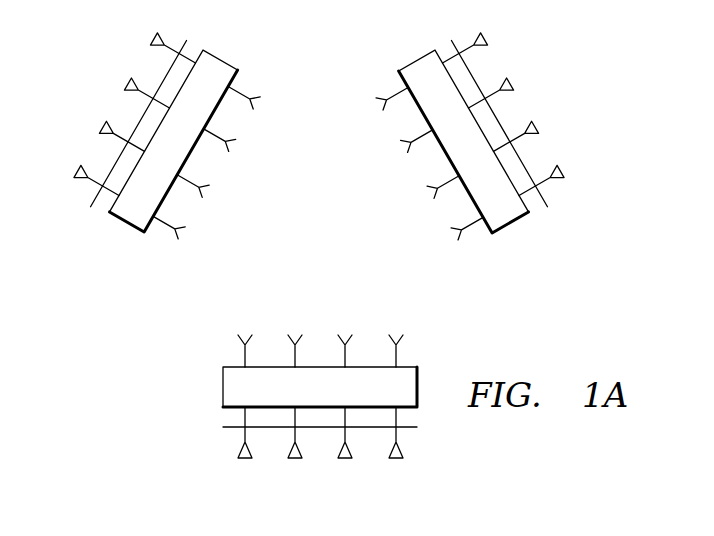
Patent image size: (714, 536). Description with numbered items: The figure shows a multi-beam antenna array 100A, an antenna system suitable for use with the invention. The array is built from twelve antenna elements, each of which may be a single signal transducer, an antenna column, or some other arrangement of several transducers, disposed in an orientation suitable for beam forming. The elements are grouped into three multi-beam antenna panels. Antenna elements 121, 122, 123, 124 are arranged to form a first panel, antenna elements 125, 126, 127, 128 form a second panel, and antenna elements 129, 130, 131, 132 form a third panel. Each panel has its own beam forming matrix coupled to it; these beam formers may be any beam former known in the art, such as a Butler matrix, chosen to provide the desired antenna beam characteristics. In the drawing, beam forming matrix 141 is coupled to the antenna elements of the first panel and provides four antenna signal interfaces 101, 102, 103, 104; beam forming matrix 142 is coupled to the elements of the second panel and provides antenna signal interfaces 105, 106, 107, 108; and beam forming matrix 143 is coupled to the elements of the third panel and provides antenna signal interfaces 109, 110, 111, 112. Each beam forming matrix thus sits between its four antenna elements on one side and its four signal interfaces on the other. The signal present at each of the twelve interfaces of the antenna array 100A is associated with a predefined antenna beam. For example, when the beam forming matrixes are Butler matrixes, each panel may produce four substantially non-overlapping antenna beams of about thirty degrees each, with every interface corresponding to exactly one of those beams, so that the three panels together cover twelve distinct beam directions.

The multi-beam antenna array 100A is at (114, 331).
The antenna signal interface 101 is at (175, 229).
The antenna signal interface 102 is at (199, 187).
The antenna signal interface 103 is at (225, 141).
The antenna signal interface 104 is at (250, 99).
The antenna signal interface 105 is at (386, 100).
The antenna signal interface 106 is at (411, 142).
The antenna signal interface 107 is at (437, 188).
The antenna signal interface 108 is at (461, 230).
The antenna signal interface 109 is at (396, 335).
The antenna signal interface 110 is at (345, 335).
The antenna signal interface 111 is at (295, 335).
The antenna signal interface 112 is at (245, 335).
The antenna element 121 is at (81, 165).
The antenna element 122 is at (106, 121).
The antenna element 123 is at (131, 78).
The antenna element 124 is at (157, 33).
The antenna element 125 is at (481, 33).
The antenna element 126 is at (507, 78).
The antenna element 127 is at (532, 121).
The antenna element 128 is at (557, 165).
The antenna element 129 is at (400, 459).
The antenna element 130 is at (350, 459).
The antenna element 131 is at (291, 459).
The antenna element 132 is at (240, 459).
The beam forming matrix 141 is at (122, 220).
The beam forming matrix 142 is at (516, 220).
The beam forming matrix 143 is at (223, 387).